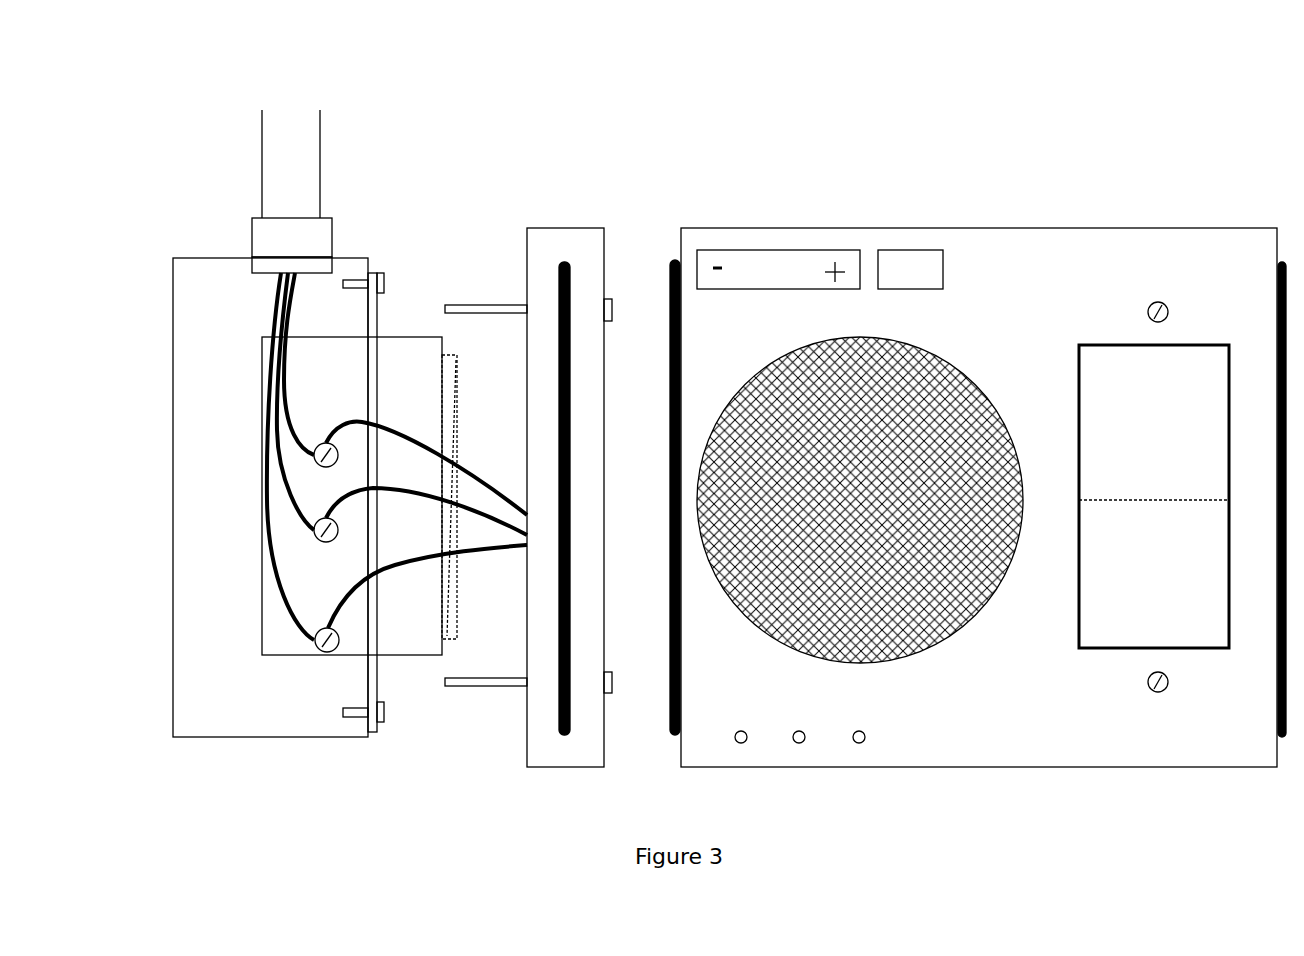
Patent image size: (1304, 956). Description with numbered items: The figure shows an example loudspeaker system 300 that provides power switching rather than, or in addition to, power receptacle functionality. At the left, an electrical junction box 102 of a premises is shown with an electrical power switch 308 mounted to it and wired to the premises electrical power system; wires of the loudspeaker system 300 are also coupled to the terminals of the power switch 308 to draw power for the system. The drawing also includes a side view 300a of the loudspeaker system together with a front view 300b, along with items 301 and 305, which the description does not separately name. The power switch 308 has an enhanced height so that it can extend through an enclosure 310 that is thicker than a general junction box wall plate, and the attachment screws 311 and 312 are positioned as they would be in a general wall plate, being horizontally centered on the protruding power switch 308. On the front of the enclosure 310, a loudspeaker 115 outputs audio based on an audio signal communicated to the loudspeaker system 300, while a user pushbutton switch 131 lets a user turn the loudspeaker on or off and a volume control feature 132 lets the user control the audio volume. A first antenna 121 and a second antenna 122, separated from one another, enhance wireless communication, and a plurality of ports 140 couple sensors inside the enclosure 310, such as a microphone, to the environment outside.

The loudspeaker system 300 is at (788, 93).
The first part (rear housing) of device 300a is at (582, 128).
The second part (front panel) of device 300b is at (979, 125).
The cable connector 301 is at (205, 131).
The electrical junction box 102 is at (223, 257).
The mounting plate 305 is at (303, 655).
The electrical power switch 308 is at (452, 385).
The enclosure 310 is at (585, 228).
The first antenna 121 is at (558, 278).
The second antenna 122 is at (1277, 285).
The attachment screw 311 is at (613, 307).
The attachment screw 312 is at (613, 683).
The user pushbutton switch 131 is at (912, 250).
The volume control feature 132 is at (777, 250).
The loudspeaker 115 is at (788, 352).
The ports 140 is at (742, 745).